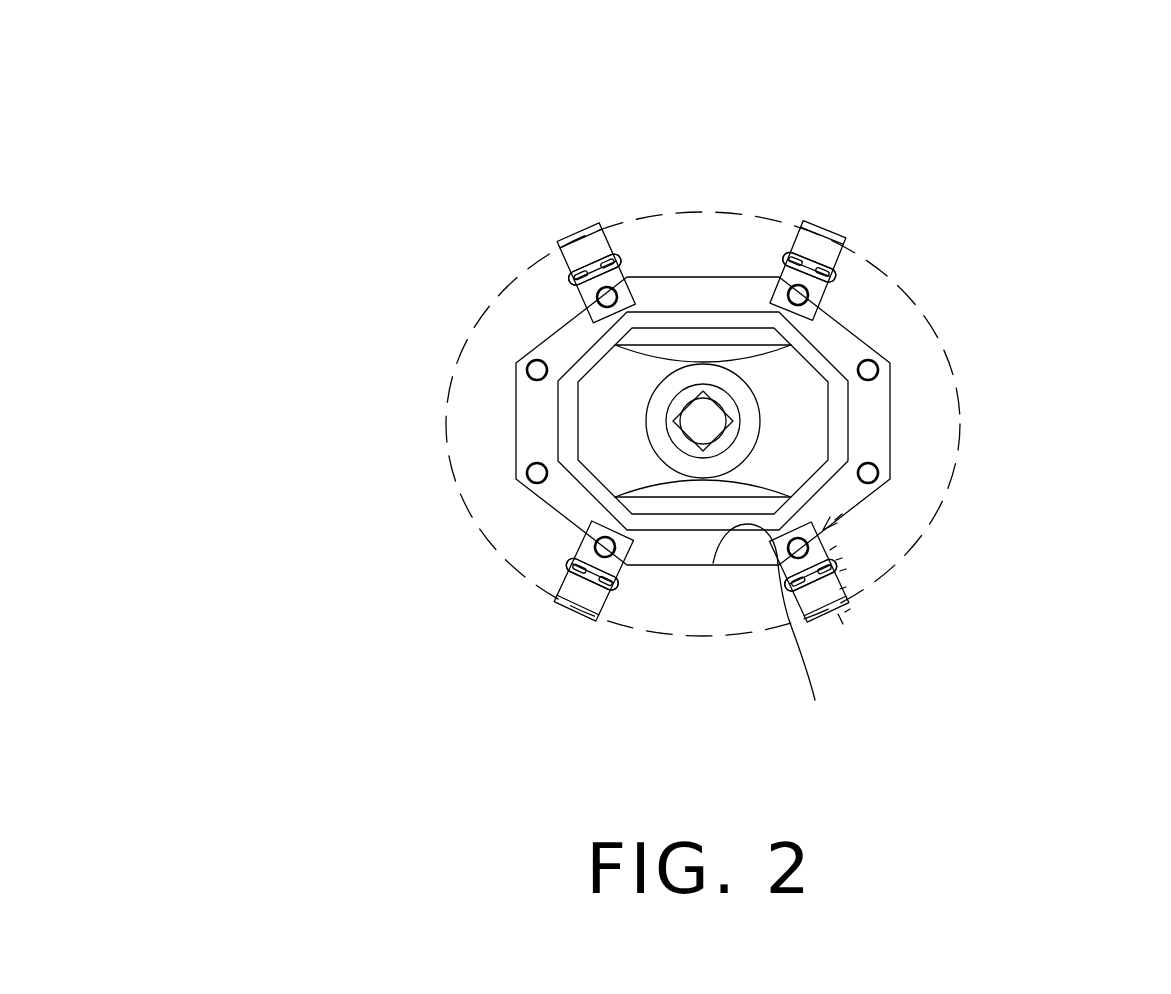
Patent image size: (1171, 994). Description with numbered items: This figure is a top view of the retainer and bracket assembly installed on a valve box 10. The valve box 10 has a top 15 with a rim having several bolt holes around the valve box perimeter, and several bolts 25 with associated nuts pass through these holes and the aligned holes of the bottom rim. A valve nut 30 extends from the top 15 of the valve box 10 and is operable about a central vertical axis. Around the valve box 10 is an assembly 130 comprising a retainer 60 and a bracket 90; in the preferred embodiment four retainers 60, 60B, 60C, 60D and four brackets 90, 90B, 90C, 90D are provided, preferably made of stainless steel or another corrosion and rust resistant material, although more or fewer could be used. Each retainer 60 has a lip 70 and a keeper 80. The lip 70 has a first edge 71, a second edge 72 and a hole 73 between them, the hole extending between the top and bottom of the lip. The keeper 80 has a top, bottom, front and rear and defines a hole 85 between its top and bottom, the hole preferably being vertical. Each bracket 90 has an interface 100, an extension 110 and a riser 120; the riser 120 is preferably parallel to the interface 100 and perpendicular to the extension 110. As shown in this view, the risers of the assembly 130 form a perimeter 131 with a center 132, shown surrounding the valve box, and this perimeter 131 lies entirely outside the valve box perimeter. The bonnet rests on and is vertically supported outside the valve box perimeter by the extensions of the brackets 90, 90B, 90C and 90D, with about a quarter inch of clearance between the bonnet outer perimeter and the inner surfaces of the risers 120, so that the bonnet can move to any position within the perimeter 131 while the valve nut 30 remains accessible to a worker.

The valve box 10 is at (874, 342).
The top 15 is at (592, 353).
The bolts 25 is at (823, 530).
The valve nut 30 is at (700, 392).
The retainer 60 is at (772, 562).
The retainer 60B is at (587, 537).
The retainer 60C is at (625, 292).
The retainer 60D is at (818, 302).
The lip 70 is at (735, 545).
The first edge 71 is at (725, 528).
The second edge 72 is at (830, 550).
The hole 73 is at (815, 680).
The keeper 80 is at (838, 614).
The hole 85 is at (836, 560).
The bracket 90 is at (838, 613).
The bracket 90B is at (558, 588).
The bracket 90C is at (580, 266).
The bracket 90D is at (799, 224).
The interface 100 is at (840, 571).
The extension 110 is at (840, 589).
The riser 120 is at (845, 612).
The assembly 130 is at (835, 520).
The perimeter 131 is at (447, 385).
The center 132 is at (713, 415).